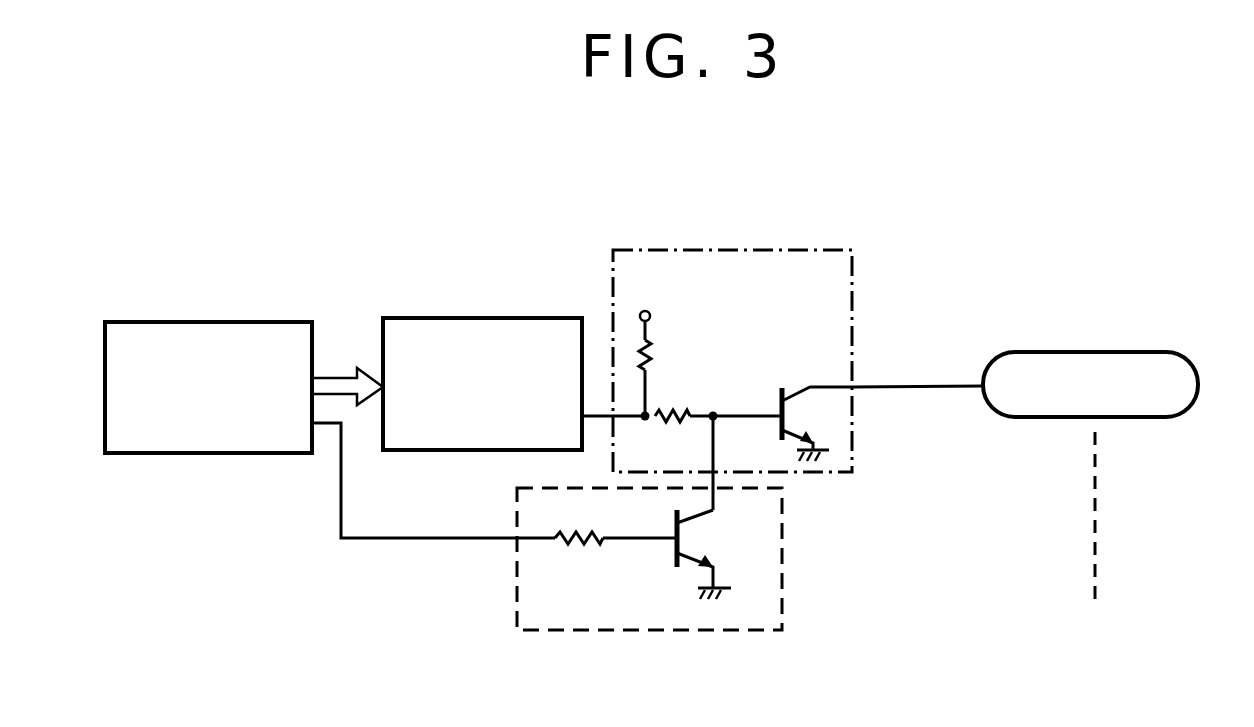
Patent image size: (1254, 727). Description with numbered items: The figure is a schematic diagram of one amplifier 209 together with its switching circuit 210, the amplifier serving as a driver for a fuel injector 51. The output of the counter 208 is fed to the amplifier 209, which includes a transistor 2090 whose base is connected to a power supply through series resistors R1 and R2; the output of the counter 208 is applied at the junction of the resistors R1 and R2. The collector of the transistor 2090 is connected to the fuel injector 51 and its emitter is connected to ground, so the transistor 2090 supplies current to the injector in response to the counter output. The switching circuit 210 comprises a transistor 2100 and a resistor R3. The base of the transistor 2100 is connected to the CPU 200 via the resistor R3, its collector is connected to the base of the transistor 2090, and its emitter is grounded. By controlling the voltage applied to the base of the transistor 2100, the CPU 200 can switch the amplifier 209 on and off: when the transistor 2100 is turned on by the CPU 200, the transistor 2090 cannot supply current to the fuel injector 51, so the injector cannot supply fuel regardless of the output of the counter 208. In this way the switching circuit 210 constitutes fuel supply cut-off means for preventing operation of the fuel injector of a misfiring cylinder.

The CPU 200 is at (207, 322).
The counter 208 is at (480, 318).
The amplifier 209 is at (852, 309).
The resistor R1 is at (665, 363).
The resistor R2 is at (667, 401).
The resistor R3 is at (616, 561).
The transistor 2090 is at (817, 415).
The transistor 2100 is at (717, 540).
The switching circuit 210 is at (513, 566).
The fuel injector 51 is at (1122, 418).